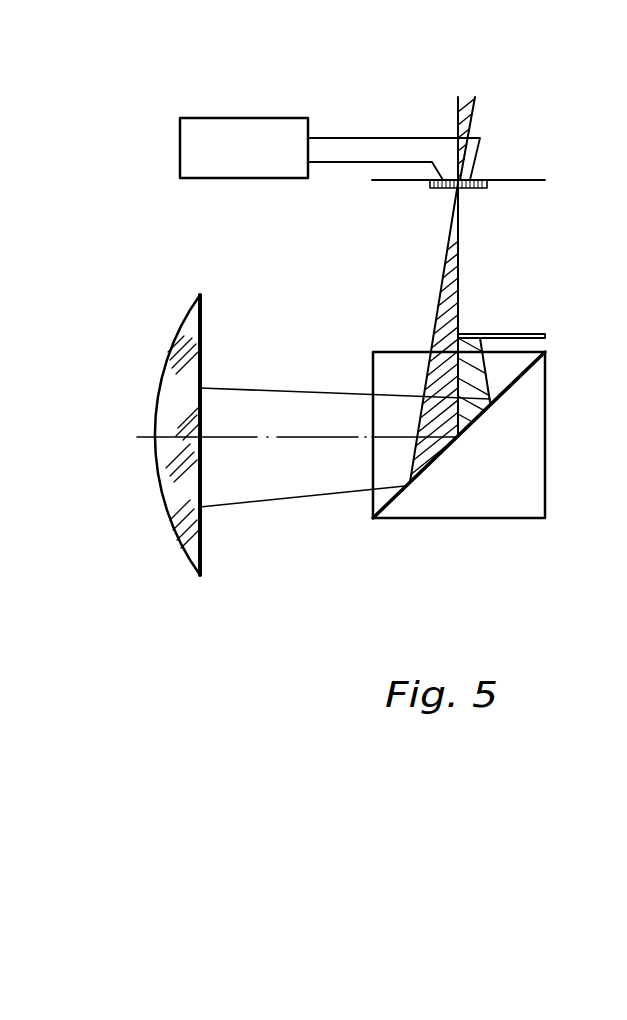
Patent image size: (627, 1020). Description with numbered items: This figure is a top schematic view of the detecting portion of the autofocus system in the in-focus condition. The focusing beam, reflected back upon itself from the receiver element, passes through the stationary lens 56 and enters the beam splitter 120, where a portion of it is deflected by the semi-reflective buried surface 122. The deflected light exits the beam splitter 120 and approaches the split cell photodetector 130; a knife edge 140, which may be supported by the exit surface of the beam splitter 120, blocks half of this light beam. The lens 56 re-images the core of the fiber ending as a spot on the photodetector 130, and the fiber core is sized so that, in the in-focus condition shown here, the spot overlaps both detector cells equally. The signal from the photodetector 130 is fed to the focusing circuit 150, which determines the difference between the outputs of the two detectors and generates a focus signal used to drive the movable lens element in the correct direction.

The stationary lens 56 is at (167, 510).
The beam splitter 120 is at (533, 517).
The semi-reflective buried surface 122 is at (445, 450).
The split cell photodetector 130 is at (487, 180).
The knife edge 140 is at (531, 334).
The focusing circuit 150 is at (190, 118).